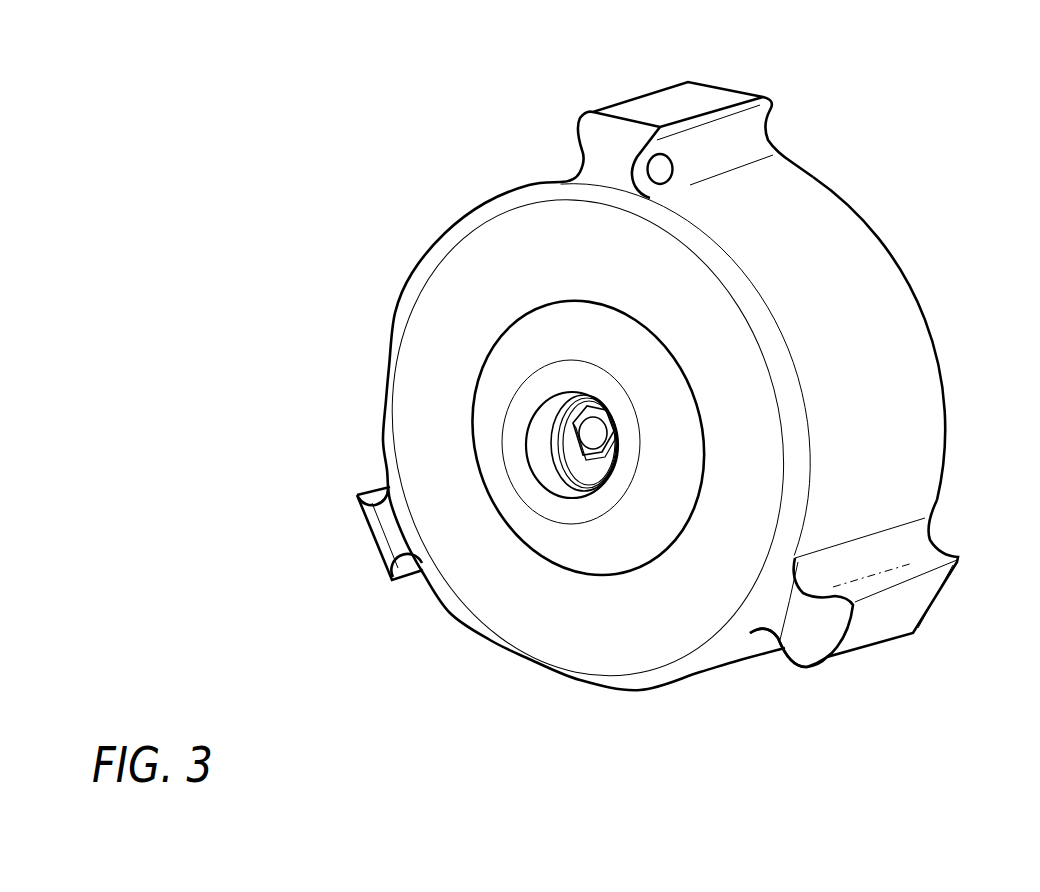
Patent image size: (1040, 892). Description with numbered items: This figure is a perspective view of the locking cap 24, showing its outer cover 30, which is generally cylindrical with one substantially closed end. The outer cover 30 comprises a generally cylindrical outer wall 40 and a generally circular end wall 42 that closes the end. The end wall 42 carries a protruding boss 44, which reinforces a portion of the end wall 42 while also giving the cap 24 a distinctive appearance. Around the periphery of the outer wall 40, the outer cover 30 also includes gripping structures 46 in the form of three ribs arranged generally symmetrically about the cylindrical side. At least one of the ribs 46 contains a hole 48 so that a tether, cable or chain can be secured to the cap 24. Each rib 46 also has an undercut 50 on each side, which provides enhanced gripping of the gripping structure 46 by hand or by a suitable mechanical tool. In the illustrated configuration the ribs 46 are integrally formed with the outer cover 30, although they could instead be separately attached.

The cap 24 is at (960, 210).
The outer cover 30 is at (453, 662).
The outer wall 40 is at (832, 213).
The end wall 42 is at (540, 622).
The boss 44 is at (488, 427).
The gripping structure 46 is at (703, 148).
The hole 48 is at (647, 172).
The undercut 50 is at (782, 640).